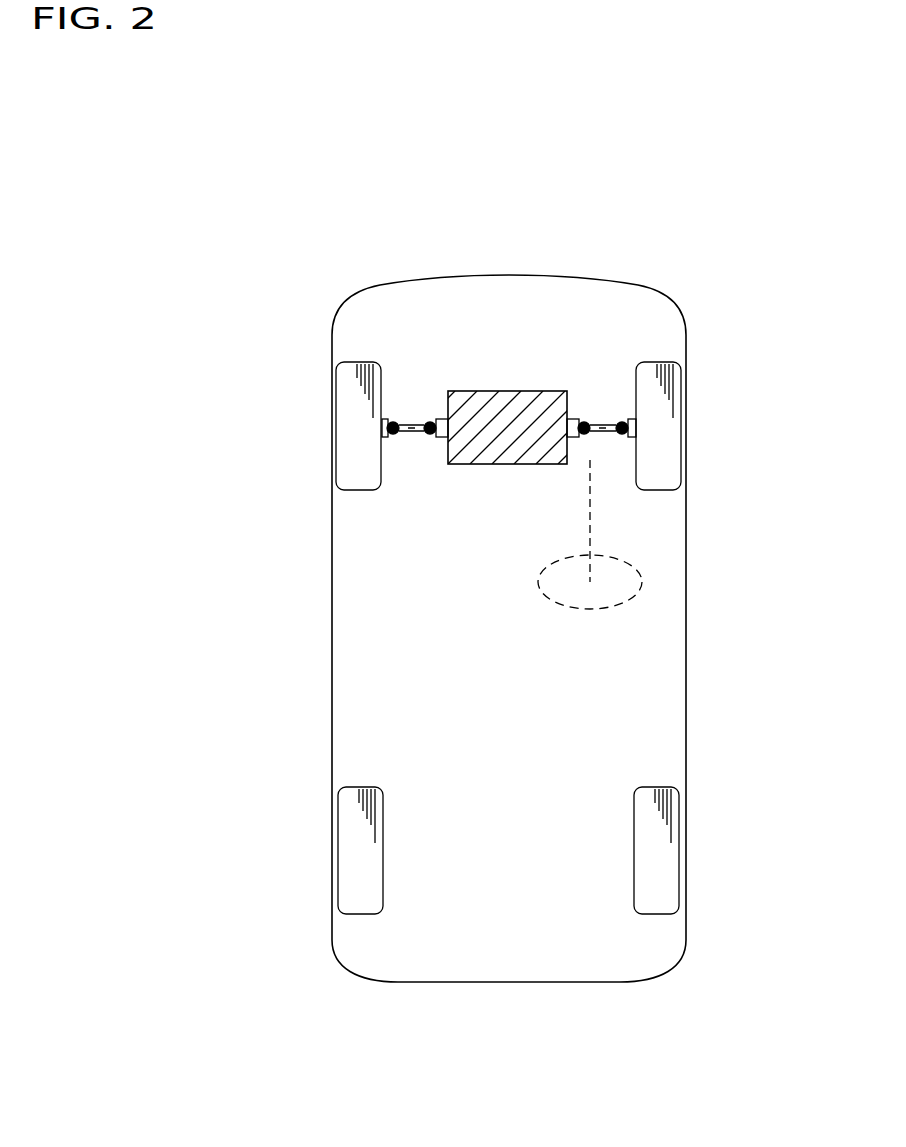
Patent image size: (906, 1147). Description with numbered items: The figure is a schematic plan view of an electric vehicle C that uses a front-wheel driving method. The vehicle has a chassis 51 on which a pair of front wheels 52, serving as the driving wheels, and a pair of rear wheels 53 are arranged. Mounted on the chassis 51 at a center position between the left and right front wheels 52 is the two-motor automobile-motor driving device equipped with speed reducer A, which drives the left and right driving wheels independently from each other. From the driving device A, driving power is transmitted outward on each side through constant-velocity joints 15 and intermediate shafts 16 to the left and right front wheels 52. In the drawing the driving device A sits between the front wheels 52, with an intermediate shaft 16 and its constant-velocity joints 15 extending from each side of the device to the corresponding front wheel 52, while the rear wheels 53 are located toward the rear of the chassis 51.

The electric vehicle C is at (562, 258).
The two-motor automobile-motor driving device equipped with speed reducer A is at (533, 382).
The chassis 51 is at (463, 335).
The constant-velocity joints 15 is at (428, 433).
The intermediate shafts 16 is at (417, 423).
The front wheels 52 is at (362, 405).
The rear wheels 53 is at (355, 852).